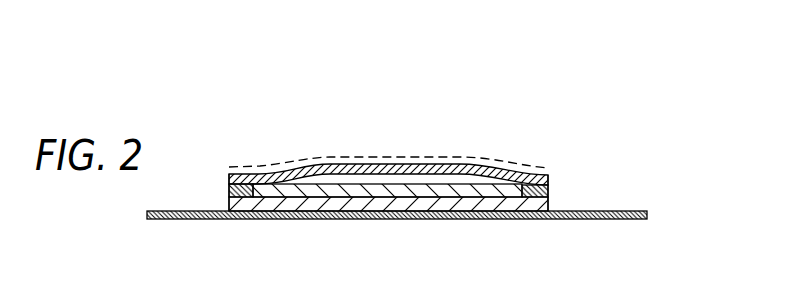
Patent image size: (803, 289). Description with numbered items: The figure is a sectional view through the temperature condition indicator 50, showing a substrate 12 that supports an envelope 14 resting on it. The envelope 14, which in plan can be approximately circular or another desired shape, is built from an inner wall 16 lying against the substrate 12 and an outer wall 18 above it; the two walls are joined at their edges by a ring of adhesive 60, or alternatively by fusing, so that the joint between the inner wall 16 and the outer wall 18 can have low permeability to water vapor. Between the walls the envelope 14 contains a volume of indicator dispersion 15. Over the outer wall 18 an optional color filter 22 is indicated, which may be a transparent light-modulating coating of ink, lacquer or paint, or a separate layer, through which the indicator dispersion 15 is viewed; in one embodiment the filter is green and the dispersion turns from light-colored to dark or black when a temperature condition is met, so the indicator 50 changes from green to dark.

The substrate 12 is at (631, 210).
The envelope 14 is at (265, 174).
The indicator dispersion 15 is at (454, 188).
The inner wall 16 is at (394, 203).
The outer wall 18 is at (364, 175).
The color filter 22 is at (299, 162).
The temperature condition indicator 50 is at (455, 98).
The ring of adhesive 60 is at (537, 186).